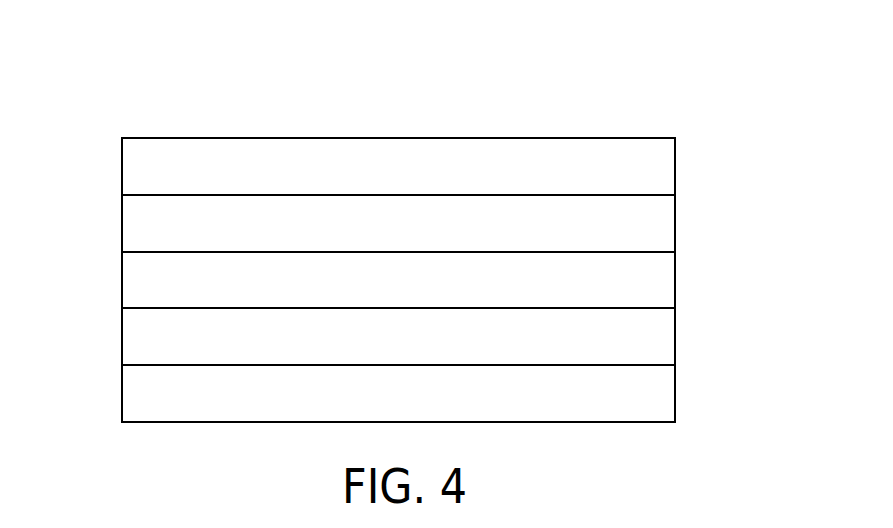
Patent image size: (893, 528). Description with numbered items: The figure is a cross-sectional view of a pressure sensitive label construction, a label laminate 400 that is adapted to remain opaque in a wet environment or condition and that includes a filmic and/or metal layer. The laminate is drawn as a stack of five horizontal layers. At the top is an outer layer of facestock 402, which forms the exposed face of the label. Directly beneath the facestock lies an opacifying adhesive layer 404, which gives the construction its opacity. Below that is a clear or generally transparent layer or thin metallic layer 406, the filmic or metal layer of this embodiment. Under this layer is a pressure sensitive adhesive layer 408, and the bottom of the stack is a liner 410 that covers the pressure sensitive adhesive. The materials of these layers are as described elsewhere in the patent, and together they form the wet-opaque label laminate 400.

The label laminate 400 is at (155, 110).
The outer layer of facestock 402 is at (675, 165).
The opacifying adhesive layer 404 is at (675, 225).
The clear or generally transparent layer or thin metallic layer 406 is at (675, 282).
The pressure sensitive adhesive layer 408 is at (675, 342).
The liner 410 is at (675, 403).